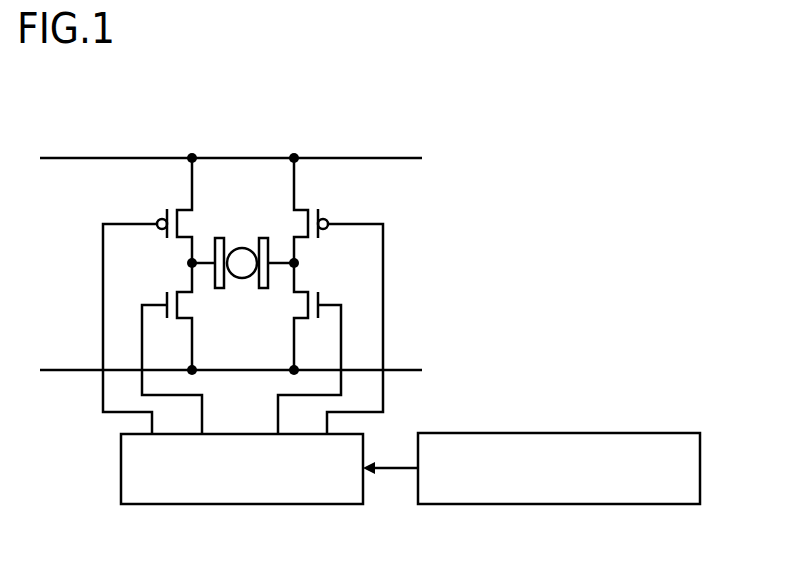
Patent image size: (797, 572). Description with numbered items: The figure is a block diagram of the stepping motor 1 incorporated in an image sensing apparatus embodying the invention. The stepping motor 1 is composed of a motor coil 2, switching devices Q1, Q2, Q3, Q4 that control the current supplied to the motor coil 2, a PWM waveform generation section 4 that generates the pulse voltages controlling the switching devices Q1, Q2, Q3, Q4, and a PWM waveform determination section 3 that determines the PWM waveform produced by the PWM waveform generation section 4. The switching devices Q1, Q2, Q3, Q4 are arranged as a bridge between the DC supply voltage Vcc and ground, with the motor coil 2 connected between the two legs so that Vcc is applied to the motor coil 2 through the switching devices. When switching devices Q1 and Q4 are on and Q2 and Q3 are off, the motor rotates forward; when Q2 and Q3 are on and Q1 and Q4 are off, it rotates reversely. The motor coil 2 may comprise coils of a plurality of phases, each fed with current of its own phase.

The stepping motor 1 is at (398, 349).
The motor coil 2 is at (241, 280).
The PWM waveform determination section 3 is at (620, 432).
The PWM waveform generation section 4 is at (160, 505).
The switching device Q1 is at (167, 210).
The switching device Q2 is at (318, 210).
The switching device Q3 is at (167, 292).
The switching device Q4 is at (318, 293).